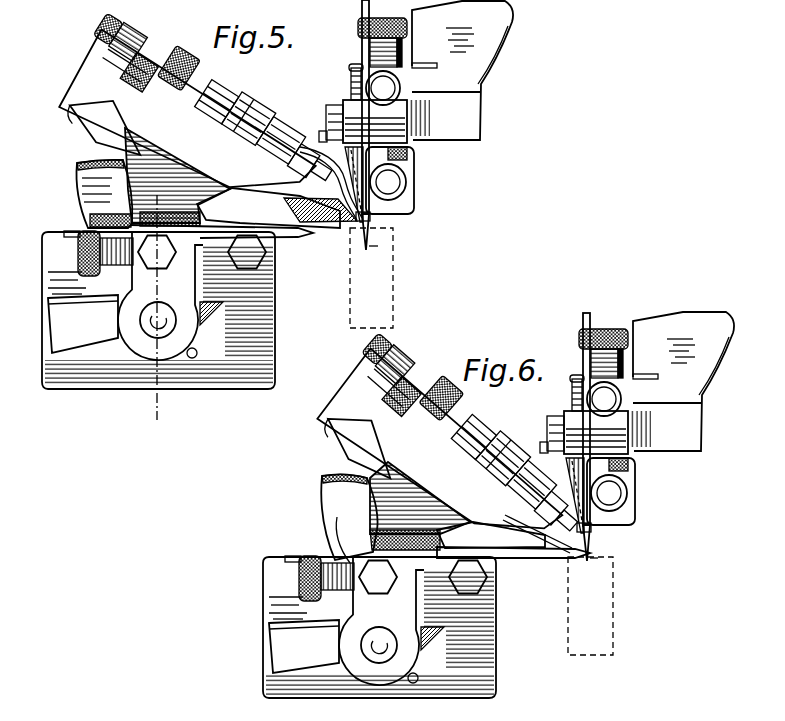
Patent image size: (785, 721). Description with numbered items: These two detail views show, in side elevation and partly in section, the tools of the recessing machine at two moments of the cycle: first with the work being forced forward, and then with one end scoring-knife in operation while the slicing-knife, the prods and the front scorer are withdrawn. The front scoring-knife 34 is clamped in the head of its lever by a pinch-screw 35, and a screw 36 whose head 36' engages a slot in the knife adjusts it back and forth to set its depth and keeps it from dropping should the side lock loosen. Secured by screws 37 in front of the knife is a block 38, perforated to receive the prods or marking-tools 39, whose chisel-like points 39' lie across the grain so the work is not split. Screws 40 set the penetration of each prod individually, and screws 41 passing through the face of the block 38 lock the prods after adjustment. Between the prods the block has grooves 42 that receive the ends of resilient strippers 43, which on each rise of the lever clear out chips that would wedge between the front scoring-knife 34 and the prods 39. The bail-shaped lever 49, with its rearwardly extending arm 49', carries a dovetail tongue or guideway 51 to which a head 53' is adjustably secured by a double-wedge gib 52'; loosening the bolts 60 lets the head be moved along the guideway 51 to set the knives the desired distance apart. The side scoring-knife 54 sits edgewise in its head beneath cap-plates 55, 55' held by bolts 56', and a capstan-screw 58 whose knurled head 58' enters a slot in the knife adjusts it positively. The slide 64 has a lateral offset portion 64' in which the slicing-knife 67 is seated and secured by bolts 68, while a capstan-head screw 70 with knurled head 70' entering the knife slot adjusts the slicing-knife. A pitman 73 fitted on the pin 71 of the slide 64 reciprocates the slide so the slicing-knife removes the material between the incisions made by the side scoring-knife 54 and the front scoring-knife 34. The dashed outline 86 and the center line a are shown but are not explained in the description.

In FIG. 5, the front scoring-knife 34 is at (361, 9).
In FIG. 6, the front scoring-knife 34 is at (592, 522).
In FIG. 5, the pinch-screw 35 is at (408, 194).
In FIG. 6, the pinch-screw 35 is at (620, 492).
In FIG. 5, the screw 36 is at (420, 33).
In FIG. 6, the screw 36 is at (636, 342).
In FIG. 5, the head of screw 36' is at (384, 19).
In FIG. 6, the head of screw 36' is at (610, 322).
In FIG. 5, the screws 37 is at (332, 118).
In FIG. 6, the screws 37 is at (558, 422).
In FIG. 5, the block 38 is at (405, 152).
In FIG. 6, the block 38 is at (575, 436).
In FIG. 5, the prods or marking-tools 39 is at (386, 191).
In FIG. 6, the prods or marking-tools 39 is at (618, 504).
In FIG. 5, the points 39' is at (400, 250).
In FIG. 6, the points 39' is at (629, 562).
In FIG. 5, the screws 40 is at (351, 78).
In FIG. 6, the screws 40 is at (572, 388).
In FIG. 5, the screws 41 is at (322, 131).
In FIG. 6, the screws 41 is at (542, 442).
In FIG. 5, the longitudinal grooves or recesses 42 is at (331, 183).
In FIG. 6, the longitudinal grooves or recesses 42 is at (491, 532).
In FIG. 5, the resilient strippers 43 is at (404, 166).
In FIG. 6, the resilient strippers 43 is at (612, 502).
In FIG. 5, the lever 49 is at (268, 208).
In FIG. 6, the lever 49 is at (330, 517).
In FIG. 5, the rearwardly-extending arm 49' is at (82, 194).
In FIG. 5, the transverse tongue or guideway 51 is at (212, 186).
In FIG. 6, the transverse tongue or guideway 51 is at (438, 490).
In FIG. 5, the double-wedge gib 52' is at (87, 124).
In FIG. 6, the double-wedge gib 52' is at (348, 443).
In FIG. 5, the head 53' is at (185, 135).
In FIG. 6, the head 53' is at (437, 464).
In FIG. 5, the side scoring or incising knife 54 is at (207, 98).
In FIG. 6, the side scoring or incising knife 54 is at (556, 560).
In FIG. 6, the cap-plate 55 is at (557, 514).
In FIG. 5, the cap-plate 55' is at (311, 169).
In FIG. 5, the bolt 56' is at (265, 114).
In FIG. 6, the bolt 56' is at (505, 450).
In FIG. 5, the capstan-screw 58 is at (102, 36).
In FIG. 6, the capstan-screw 58 is at (373, 358).
In FIG. 5, the knurled head 58' is at (185, 51).
In FIG. 6, the knurled head 58' is at (441, 375).
In FIG. 5, the bolts 60 is at (138, 73).
In FIG. 6, the bolts 60 is at (388, 404).
In FIG. 5, the slide 64 is at (158, 321).
In FIG. 6, the slide 64 is at (379, 627).
In FIG. 5, the lateral offset portion 64' is at (160, 296).
In FIG. 6, the lateral offset portion 64' is at (381, 621).
In FIG. 5, the slicing-knife 67 is at (294, 240).
In FIG. 6, the slicing-knife 67 is at (342, 530).
In FIG. 5, the bolts 68 is at (240, 250).
In FIG. 6, the bolts 68 is at (462, 577).
In FIG. 5, the capstan-head screw 70 is at (106, 269).
In FIG. 6, the capstan-head screw 70 is at (337, 588).
In FIG. 5, the knurled head 70' is at (51, 254).
In FIG. 6, the knurled head 70' is at (274, 581).
In FIG. 5, the rod or pin 71 is at (147, 328).
In FIG. 6, the rod or pin 71 is at (379, 645).
In FIG. 5, the pitman 73 is at (83, 324).
In FIG. 6, the pitman 73 is at (304, 646).
In FIG. 5, the dashed outline 86 is at (380, 299).
In FIG. 6, the dashed outline 86 is at (614, 636).
In FIG. 5, the center line a is at (155, 309).